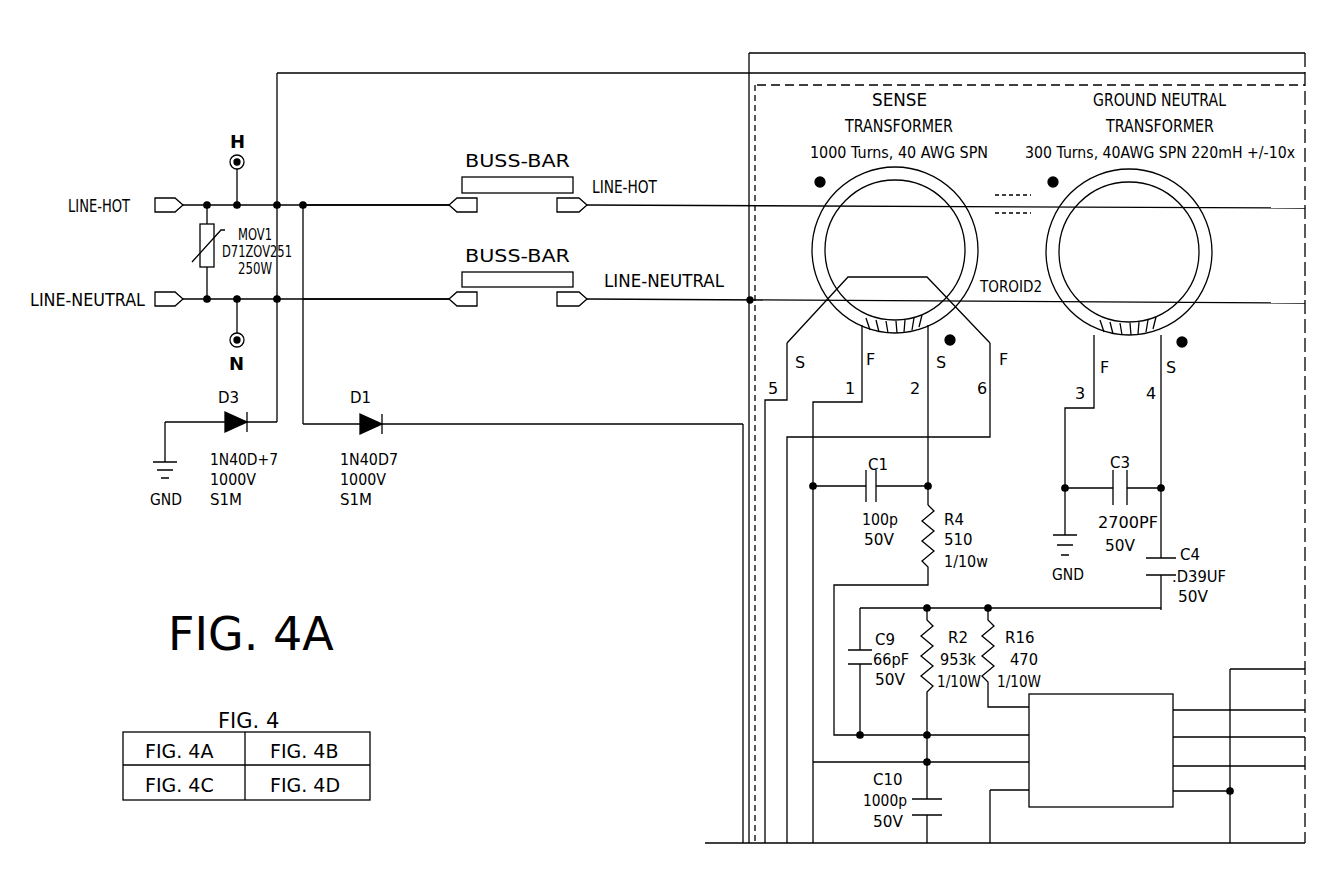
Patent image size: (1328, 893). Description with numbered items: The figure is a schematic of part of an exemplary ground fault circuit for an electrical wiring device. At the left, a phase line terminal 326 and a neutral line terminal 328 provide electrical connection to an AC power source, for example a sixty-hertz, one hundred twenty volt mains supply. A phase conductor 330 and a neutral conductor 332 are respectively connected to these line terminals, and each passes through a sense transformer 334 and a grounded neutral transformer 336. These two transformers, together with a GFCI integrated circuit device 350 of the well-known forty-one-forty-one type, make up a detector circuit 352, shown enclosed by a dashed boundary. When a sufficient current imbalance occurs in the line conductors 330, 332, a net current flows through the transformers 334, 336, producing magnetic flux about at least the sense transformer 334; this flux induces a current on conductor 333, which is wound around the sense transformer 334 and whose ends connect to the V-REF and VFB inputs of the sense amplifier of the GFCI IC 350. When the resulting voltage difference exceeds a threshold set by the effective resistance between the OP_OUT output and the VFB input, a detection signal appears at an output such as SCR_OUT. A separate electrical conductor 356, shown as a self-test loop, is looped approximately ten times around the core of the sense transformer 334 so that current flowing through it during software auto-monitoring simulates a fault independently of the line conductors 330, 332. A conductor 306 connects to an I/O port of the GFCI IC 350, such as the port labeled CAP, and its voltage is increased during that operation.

The phase line terminal 326 is at (180, 200).
The neutral line terminal 328 is at (165, 306).
The phase conductor 330 is at (322, 203).
The neutral conductor 332 is at (332, 300).
The sense transformer 334 is at (905, 170).
The grounded neutral transformer 336 is at (1135, 172).
The electrical conductor 356 is at (903, 277).
The conductor 333 is at (927, 421).
The detector circuit 352 is at (753, 538).
The GFCI integrated circuit device 350 is at (1112, 708).
The conductor 306 is at (1212, 709).